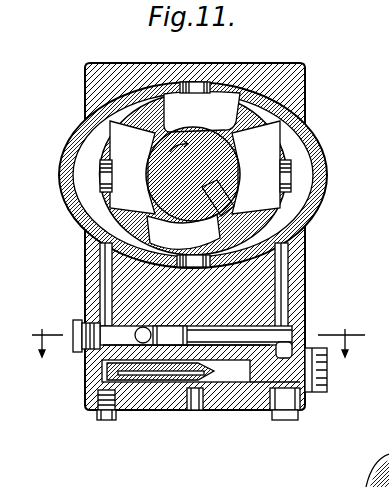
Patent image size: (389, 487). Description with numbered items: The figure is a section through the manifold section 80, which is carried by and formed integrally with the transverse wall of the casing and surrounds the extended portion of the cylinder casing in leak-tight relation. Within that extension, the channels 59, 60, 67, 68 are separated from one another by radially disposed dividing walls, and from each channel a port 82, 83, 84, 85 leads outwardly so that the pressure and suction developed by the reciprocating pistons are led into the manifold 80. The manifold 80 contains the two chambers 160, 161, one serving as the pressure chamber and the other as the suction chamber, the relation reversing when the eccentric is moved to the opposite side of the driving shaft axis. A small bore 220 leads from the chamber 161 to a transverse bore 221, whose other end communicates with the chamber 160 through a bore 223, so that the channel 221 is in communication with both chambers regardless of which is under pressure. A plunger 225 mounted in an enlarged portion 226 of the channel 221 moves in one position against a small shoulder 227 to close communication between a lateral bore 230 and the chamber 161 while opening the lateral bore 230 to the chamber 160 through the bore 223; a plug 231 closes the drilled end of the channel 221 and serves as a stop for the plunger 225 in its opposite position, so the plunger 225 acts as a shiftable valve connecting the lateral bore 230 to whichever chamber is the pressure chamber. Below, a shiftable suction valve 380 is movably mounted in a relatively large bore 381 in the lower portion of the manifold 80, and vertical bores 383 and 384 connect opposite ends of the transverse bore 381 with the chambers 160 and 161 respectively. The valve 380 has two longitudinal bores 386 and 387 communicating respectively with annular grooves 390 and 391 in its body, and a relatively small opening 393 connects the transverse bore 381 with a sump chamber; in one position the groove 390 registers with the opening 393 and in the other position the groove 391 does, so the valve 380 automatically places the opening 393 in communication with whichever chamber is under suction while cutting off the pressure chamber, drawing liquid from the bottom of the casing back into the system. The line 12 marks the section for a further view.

The section line 12- 12 is at (197, 332).
The channel 59 is at (132, 167).
The channel 60 is at (256, 167).
The channel 67 is at (202, 112).
The channel 68 is at (183, 231).
The manifold section 80 is at (308, 124).
The port 82 is at (106, 170).
The port 83 is at (287, 176).
The port 84 is at (197, 85).
The port 85 is at (192, 262).
The pressure and suction chamber 160 is at (72, 184).
The pressure and suction chamber 161 is at (303, 158).
The bore 220 is at (215, 308).
The transverse bore 221 is at (278, 313).
The bore 223 is at (108, 270).
The plunger 225 is at (85, 256).
The enlarged portion 226 is at (82, 396).
The shoulder 227 is at (288, 273).
The lateral bore 230 is at (145, 327).
The plug 231 is at (82, 372).
The suction valve 380 is at (143, 414).
The bore 381 is at (262, 392).
The vertical bore 383 is at (76, 352).
The vertical bore 384 is at (300, 363).
The longitudinal bore 386 is at (80, 412).
The longitudinal bore 387 is at (224, 401).
The annular groove 390 is at (200, 414).
The annular groove 391 is at (135, 413).
The small opening 393 is at (204, 421).